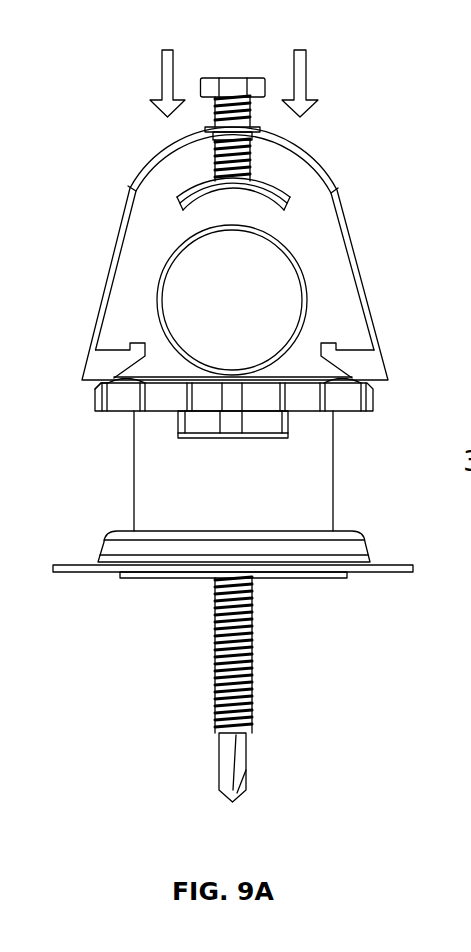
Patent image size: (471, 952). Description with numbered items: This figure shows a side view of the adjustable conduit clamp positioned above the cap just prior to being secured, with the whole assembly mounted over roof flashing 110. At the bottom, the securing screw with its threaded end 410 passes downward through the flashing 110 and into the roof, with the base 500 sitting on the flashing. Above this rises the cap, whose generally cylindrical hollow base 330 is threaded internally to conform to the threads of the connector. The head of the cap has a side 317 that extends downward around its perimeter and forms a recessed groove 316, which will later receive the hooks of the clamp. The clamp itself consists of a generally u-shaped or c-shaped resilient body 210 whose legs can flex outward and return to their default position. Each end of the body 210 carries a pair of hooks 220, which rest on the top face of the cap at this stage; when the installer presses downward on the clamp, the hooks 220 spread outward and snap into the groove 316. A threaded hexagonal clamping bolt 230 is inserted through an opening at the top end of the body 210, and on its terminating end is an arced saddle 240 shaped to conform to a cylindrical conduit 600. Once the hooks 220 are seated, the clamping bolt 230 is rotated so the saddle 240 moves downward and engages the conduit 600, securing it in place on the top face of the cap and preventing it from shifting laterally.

The clamping bolt 230 is at (234, 76).
The saddle 240 is at (273, 183).
The body 210 is at (351, 227).
The conduit 600 is at (157, 300).
The hooks 220 is at (88, 358).
The side 317 is at (93, 397).
The groove 316 is at (354, 413).
The base 330 is at (135, 470).
The base 500 is at (353, 532).
The flashing 110 is at (403, 565).
The threaded portion 410 is at (217, 683).